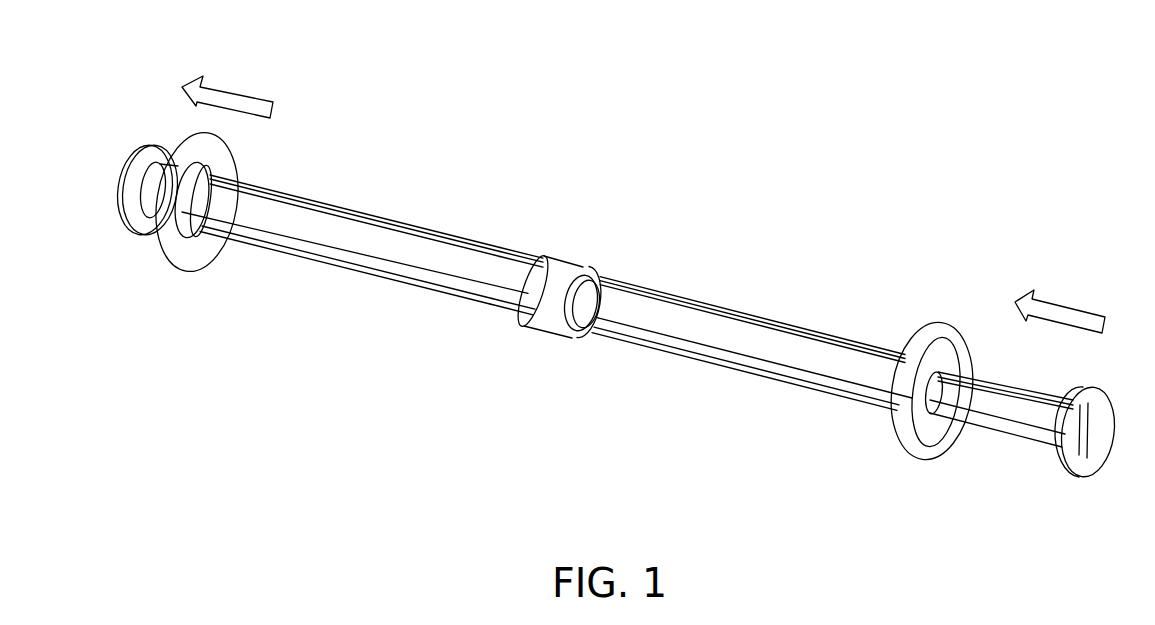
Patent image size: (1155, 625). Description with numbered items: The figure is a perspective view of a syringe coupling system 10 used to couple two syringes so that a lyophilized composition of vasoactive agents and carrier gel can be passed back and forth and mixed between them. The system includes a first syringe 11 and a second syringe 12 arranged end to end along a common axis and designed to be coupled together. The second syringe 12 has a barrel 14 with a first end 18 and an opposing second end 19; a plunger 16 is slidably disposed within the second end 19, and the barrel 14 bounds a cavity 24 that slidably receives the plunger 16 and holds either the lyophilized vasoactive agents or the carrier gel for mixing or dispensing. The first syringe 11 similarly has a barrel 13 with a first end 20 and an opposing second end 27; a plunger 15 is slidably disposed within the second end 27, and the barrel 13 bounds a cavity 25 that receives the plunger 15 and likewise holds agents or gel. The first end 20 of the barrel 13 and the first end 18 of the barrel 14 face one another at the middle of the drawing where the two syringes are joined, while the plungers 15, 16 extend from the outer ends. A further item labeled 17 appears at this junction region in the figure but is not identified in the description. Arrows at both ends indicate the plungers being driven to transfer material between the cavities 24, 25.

The syringe coupling system 10 is at (732, 53).
The first syringe 11 is at (337, 400).
The second syringe 12 is at (732, 483).
The barrel 13 is at (383, 220).
The barrel 14 is at (763, 315).
The plunger 15 is at (147, 192).
The plunger 16 is at (1018, 408).
The connection junction 17 is at (523, 248).
The first end 18 is at (588, 340).
The second end 19 is at (892, 408).
The first end 20 is at (523, 315).
The cavity 24 is at (835, 357).
The cavity 25 is at (417, 252).
The second end 27 is at (215, 183).